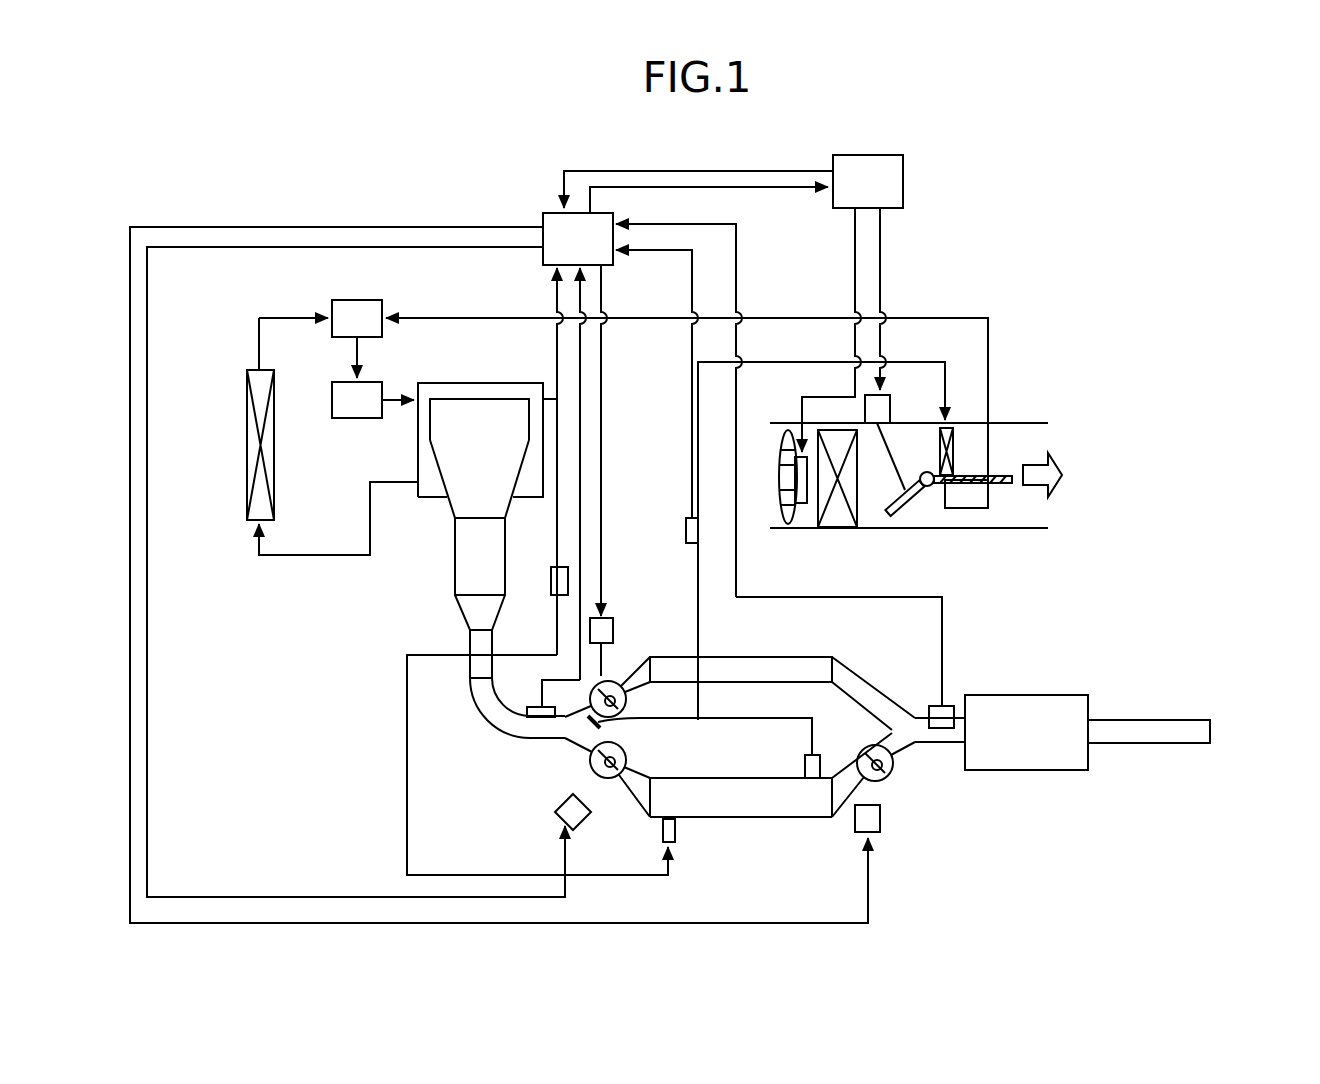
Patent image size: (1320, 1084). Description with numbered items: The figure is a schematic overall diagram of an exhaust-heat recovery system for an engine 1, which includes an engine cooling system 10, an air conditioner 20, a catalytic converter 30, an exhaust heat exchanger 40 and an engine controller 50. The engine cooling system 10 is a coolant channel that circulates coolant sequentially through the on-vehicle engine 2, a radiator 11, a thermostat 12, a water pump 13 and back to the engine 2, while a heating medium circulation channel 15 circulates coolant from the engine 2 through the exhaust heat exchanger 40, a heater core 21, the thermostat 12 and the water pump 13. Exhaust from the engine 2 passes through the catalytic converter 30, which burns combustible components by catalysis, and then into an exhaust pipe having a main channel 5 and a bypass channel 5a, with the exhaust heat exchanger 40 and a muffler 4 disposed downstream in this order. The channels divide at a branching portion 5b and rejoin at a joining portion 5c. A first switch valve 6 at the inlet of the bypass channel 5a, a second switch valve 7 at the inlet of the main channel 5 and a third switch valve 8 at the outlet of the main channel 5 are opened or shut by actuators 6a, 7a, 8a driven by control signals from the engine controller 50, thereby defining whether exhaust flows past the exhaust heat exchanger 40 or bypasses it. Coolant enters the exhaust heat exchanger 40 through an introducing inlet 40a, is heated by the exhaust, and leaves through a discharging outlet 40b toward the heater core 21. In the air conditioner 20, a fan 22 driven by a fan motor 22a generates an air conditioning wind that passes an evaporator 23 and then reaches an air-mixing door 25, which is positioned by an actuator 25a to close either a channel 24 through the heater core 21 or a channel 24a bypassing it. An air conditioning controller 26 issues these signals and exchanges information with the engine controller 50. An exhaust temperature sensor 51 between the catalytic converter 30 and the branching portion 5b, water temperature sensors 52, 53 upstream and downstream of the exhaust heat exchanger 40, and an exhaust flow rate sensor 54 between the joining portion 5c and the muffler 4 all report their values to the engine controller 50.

The engine 1 is at (368, 192).
The on-vehicle engine 2 is at (485, 410).
The muffler 4 is at (1030, 772).
The main channel 5 is at (700, 776).
The bypass channel 5a is at (740, 662).
The branching portion 5b is at (578, 733).
The joining portion 5c is at (905, 728).
The first switch valve 6 is at (618, 686).
The actuator 6a is at (610, 630).
The second switch valve 7 is at (592, 770).
The actuator 7a is at (556, 812).
The third switch valve 8 is at (888, 776).
The actuator 8a is at (880, 818).
The engine cooling system 10 is at (236, 336).
The radiator 11 is at (247, 455).
The thermostat 12 is at (362, 300).
The water pump 13 is at (352, 418).
The heating medium circulation channel 15 is at (962, 316).
The air conditioner 20 is at (1022, 416).
The heater core 21 is at (950, 430).
The fan 22 is at (785, 508).
The fan motor 22a is at (792, 522).
The evaporator 23 is at (848, 522).
The channel 24 is at (1014, 443).
The channel 24a is at (1014, 506).
The air-mixing door 25 is at (912, 505).
The actuator 25a is at (885, 400).
The air conditioning controller 26 is at (903, 183).
The catalytic converter 30 is at (468, 575).
The exhaust heat exchanger 40 is at (770, 818).
The introducing inlet 40a is at (663, 832).
The discharging outlet 40b is at (815, 780).
The engine controller 50 is at (543, 213).
The exhaust temperature sensor 51 is at (530, 705).
The water temperature sensor 52 is at (568, 578).
The water temperature sensor 53 is at (686, 522).
The exhaust flow rate sensor 54 is at (945, 708).